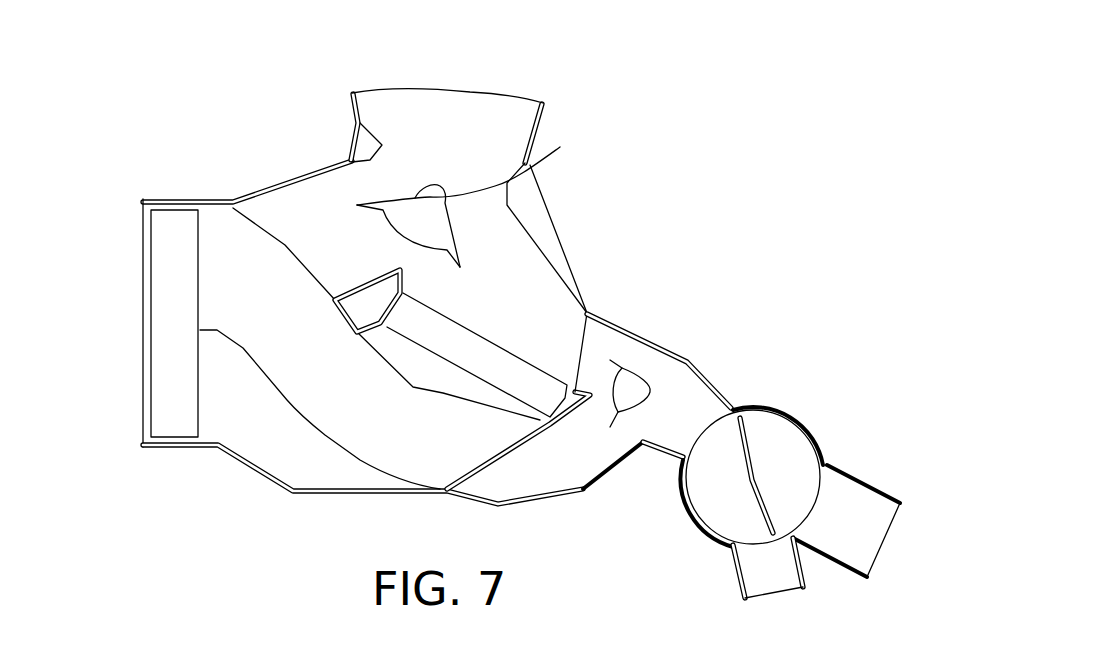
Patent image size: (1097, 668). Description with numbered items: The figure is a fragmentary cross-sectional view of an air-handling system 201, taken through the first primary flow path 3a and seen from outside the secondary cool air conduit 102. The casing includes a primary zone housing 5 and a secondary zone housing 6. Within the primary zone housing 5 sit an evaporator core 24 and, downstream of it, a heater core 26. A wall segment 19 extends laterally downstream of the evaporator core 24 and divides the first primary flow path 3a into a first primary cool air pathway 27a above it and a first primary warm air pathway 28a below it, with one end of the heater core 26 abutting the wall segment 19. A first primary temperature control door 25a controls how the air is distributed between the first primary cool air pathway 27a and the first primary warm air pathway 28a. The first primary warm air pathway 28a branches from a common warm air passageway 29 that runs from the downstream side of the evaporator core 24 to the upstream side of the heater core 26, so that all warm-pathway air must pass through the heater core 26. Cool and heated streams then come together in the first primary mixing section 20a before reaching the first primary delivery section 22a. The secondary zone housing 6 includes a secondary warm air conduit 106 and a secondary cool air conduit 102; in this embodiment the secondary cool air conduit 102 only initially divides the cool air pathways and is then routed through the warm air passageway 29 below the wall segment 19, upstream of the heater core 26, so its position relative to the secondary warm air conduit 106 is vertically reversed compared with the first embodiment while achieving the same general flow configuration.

The air-handling system 201 is at (197, 77).
The primary zone housing 5 is at (207, 197).
The evaporator core 24 is at (175, 330).
The warm air passageway 29 is at (259, 446).
The first primary cool air pathway 27a is at (349, 219).
The wall segment 19 is at (360, 289).
The heater core 26 is at (492, 367).
The first primary flow path 3a is at (512, 108).
The first primary delivery section 22a is at (464, 108).
The first primary warm air pathway 28a is at (496, 289).
The first primary temperature control door 25a is at (478, 162).
The first primary mixing section 20a is at (428, 165).
The secondary warm air conduit 106 is at (608, 318).
The secondary cool air conduit 102 is at (593, 489).
The secondary zone housing 6 is at (761, 391).